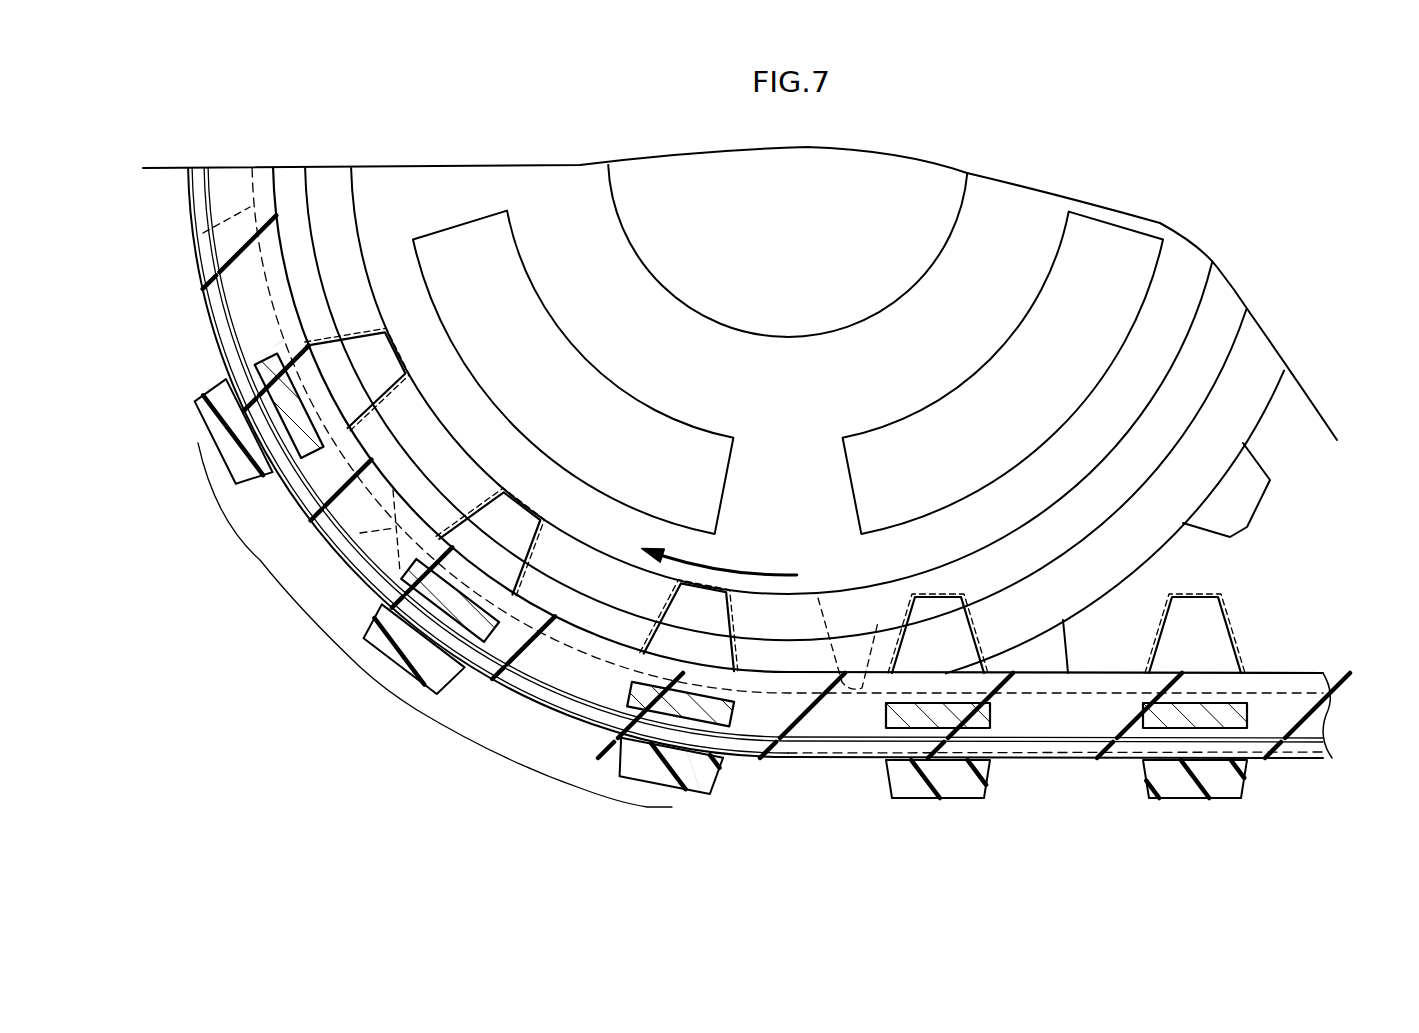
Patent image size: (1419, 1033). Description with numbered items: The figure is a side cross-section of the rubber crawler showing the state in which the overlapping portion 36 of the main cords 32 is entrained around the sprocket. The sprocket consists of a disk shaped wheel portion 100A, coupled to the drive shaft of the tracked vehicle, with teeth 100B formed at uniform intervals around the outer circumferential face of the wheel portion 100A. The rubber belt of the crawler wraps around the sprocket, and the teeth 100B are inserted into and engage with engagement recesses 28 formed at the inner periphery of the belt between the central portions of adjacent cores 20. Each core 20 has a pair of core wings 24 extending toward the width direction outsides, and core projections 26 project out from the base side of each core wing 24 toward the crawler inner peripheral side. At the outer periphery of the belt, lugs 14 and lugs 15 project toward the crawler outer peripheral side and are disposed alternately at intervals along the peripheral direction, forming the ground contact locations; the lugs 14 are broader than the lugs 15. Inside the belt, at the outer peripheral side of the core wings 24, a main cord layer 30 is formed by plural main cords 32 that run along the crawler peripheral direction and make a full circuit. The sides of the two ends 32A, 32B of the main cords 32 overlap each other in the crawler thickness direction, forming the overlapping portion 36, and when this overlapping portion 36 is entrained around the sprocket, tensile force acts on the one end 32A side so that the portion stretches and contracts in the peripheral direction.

The wheel portion 100A is at (1263, 418).
The teeth 100B is at (400, 560).
The main cord 32 is at (769, 516).
The main cord layer 30 is at (848, 748).
The one end of main cord 32A is at (683, 740).
The other end of main cord 32B is at (273, 347).
The core projection 26 is at (545, 522).
The core 20 is at (752, 541).
The core wing 24 is at (460, 588).
The engagement recess 28 is at (500, 560).
The lug 14 is at (207, 396).
The lug 15 is at (445, 690).
The overlapping portion 36 is at (392, 694).